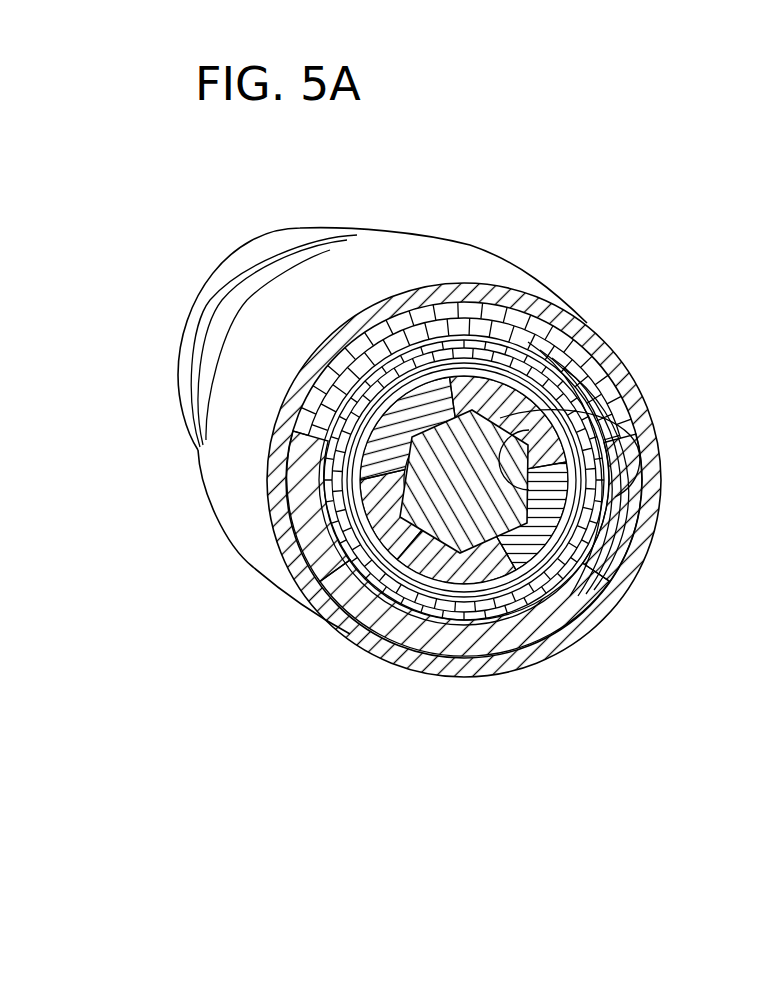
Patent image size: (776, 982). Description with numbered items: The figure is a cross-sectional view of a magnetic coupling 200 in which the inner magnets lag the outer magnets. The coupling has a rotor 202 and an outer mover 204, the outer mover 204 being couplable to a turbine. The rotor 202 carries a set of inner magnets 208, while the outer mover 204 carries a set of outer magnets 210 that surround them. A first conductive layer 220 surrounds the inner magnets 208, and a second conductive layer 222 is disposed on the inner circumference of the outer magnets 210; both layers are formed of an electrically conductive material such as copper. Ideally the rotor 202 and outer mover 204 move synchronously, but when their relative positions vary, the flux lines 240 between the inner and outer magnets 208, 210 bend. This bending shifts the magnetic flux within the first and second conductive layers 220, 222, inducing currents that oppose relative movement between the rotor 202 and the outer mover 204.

The magnetic coupling 200 is at (500, 221).
The rotor 202 is at (450, 515).
The outer mover 204 is at (362, 637).
The inner magnets 208 is at (465, 655).
The outer magnets 210 is at (572, 597).
The first conductive layer 220 is at (600, 562).
The second conductive layer 222 is at (557, 366).
The flux lines 240 is at (650, 474).